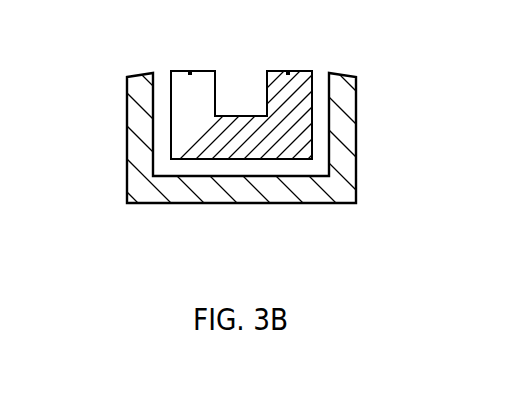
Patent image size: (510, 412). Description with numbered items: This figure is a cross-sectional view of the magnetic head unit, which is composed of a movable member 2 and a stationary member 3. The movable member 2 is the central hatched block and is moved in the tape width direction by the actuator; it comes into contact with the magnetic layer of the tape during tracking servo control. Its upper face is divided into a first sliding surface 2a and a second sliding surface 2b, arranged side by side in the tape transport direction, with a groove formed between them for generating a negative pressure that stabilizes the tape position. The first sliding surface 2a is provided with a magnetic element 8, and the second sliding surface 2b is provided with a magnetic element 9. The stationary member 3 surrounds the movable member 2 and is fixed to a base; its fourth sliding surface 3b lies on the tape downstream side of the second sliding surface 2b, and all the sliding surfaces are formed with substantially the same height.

The movable member 2 is at (240, 128).
The first sliding surface 2a is at (201, 70).
The second sliding surface 2b is at (297, 70).
The stationary member 3 is at (248, 203).
The fourth sliding surface 3b is at (142, 75).
The magnetic element 8 is at (190, 70).
The magnetic element 9 is at (288, 70).